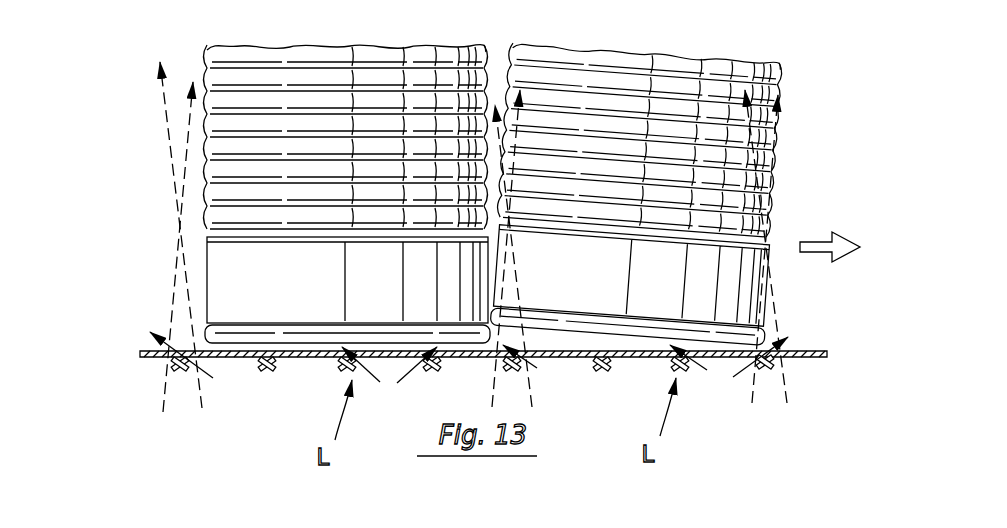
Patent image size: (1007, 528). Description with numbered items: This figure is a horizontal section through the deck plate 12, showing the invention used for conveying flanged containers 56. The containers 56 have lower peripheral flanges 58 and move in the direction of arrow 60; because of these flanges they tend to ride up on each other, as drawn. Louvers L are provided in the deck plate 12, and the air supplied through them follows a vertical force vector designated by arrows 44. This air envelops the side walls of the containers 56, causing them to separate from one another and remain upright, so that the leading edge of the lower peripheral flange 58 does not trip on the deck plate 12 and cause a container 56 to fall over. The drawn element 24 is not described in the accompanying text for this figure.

The deck plate 12 is at (805, 353).
The air nozzles 24 is at (158, 327).
The arrows 44 is at (168, 133).
The containers 56 is at (215, 68).
The lower peripheral flange 58 is at (250, 332).
The arrow 60 is at (812, 240).